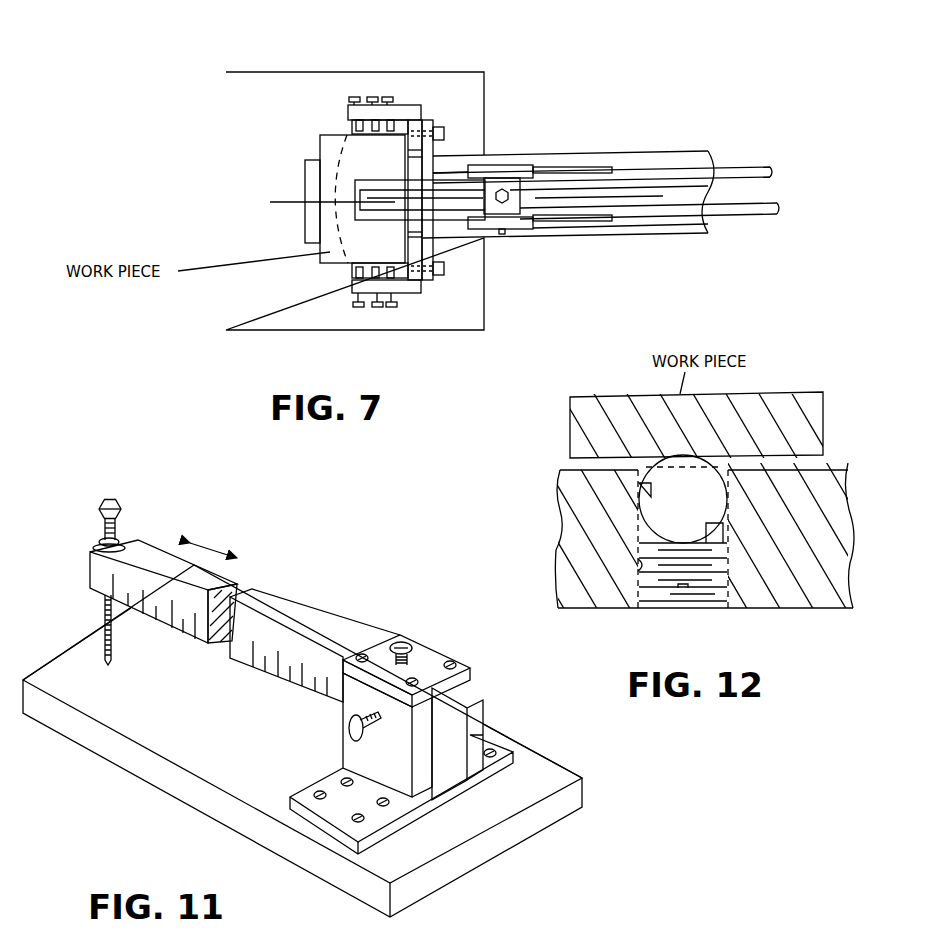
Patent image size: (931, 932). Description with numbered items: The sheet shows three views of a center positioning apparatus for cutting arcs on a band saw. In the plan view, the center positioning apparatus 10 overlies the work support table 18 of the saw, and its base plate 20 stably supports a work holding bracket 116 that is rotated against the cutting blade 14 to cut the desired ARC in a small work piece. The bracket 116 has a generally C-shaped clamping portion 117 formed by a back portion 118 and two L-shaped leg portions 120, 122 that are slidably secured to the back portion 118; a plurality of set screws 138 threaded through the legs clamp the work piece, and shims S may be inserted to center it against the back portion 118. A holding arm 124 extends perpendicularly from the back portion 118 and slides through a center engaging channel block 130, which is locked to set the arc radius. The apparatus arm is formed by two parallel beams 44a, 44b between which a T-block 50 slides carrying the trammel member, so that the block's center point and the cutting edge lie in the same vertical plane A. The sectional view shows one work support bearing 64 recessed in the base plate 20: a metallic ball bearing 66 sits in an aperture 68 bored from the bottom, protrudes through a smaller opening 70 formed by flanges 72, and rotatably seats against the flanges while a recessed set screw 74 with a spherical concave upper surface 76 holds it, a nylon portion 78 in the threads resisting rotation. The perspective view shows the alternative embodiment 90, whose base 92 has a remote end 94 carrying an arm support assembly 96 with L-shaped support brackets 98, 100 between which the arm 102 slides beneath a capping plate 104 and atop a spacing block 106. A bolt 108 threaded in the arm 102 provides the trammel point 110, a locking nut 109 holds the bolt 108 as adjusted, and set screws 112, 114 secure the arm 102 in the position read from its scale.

In FIG. 7, the center positioning apparatus 10 is at (578, 167).
In FIG. 7, the cutting blade 14 is at (334, 195).
In FIG. 7, the work support table 18 is at (268, 104).
In FIG. 7, the base plate 20 is at (670, 232).
In FIG. 12, the base plate 20 is at (823, 595).
In FIG. 7, the beam 44a is at (760, 173).
In FIG. 7, the beam 44b is at (760, 214).
In FIG. 7, the T-block 50 is at (513, 185).
In FIG. 12, the work support bearing 64 is at (697, 518).
In FIG. 12, the ball bearing 66 is at (696, 507).
In FIG. 12, the aperture 68 is at (650, 500).
In FIG. 12, the opening 70 is at (703, 472).
In FIG. 12, the flanges 72 is at (648, 470).
In FIG. 12, the set screw 74 is at (716, 565).
In FIG. 12, the spherical concave upper surface 76 is at (724, 523).
In FIG. 12, the nylon portion 78 is at (640, 565).
In FIG. 11, the alternative embodiment 90 is at (302, 741).
In FIG. 11, the base 92 is at (204, 721).
In FIG. 11, the end 94 is at (490, 853).
In FIG. 11, the arm support assembly 96 is at (411, 822).
In FIG. 11, the support bracket 98 is at (390, 766).
In FIG. 11, the support bracket 100 is at (493, 768).
In FIG. 11, the arm 102 is at (308, 628).
In FIG. 11, the capping plate 104 is at (437, 657).
In FIG. 11, the spacing block 106 is at (438, 795).
In FIG. 11, the bolt 108 is at (117, 503).
In FIG. 11, the locking nut 109 is at (98, 543).
In FIG. 11, the trammel point 110 is at (112, 663).
In FIG. 11, the set screw 112 is at (350, 727).
In FIG. 11, the set screw 114 is at (405, 645).
In FIG. 7, the work holding bracket 116 is at (448, 172).
In FIG. 7, the clamping portion 117 is at (446, 63).
In FIG. 7, the back portion 118 is at (431, 252).
In FIG. 7, the leg portion 120 is at (415, 287).
In FIG. 7, the leg portion 122 is at (353, 118).
In FIG. 7, the holding arm 124 is at (603, 167).
In FIG. 7, the channel block 130 is at (506, 169).
In FIG. 7, the set screws 138 is at (386, 95).
In FIG. 7, the vertical plane A is at (588, 196).
In FIG. 7, the shims S is at (350, 129).
In FIG. 7, the cutting arc ARC is at (337, 155).